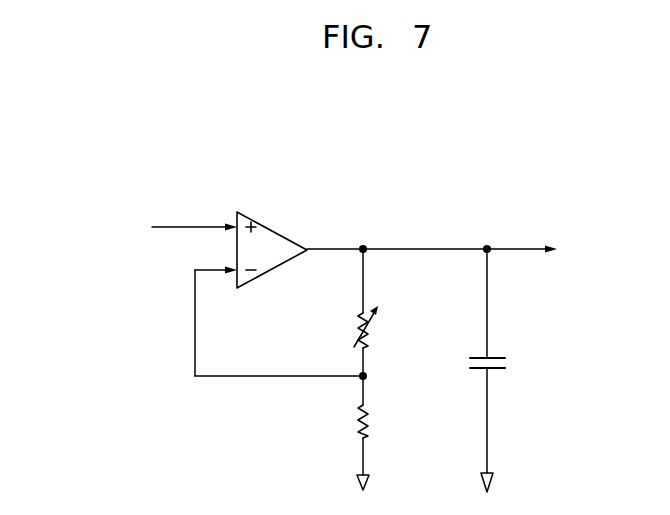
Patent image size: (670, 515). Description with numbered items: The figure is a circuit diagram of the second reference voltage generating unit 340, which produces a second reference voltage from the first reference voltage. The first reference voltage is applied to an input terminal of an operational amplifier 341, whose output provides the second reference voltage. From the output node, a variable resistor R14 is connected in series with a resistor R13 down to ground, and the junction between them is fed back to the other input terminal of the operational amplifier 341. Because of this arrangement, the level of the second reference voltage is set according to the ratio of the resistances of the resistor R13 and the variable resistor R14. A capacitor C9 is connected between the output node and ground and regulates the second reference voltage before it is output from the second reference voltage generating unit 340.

The second reference voltage generating unit 340 is at (569, 194).
The operational amplifier 341 is at (271, 226).
The variable resistor R14 is at (382, 312).
The resistor R13 is at (383, 433).
The capacitor C9 is at (501, 370).